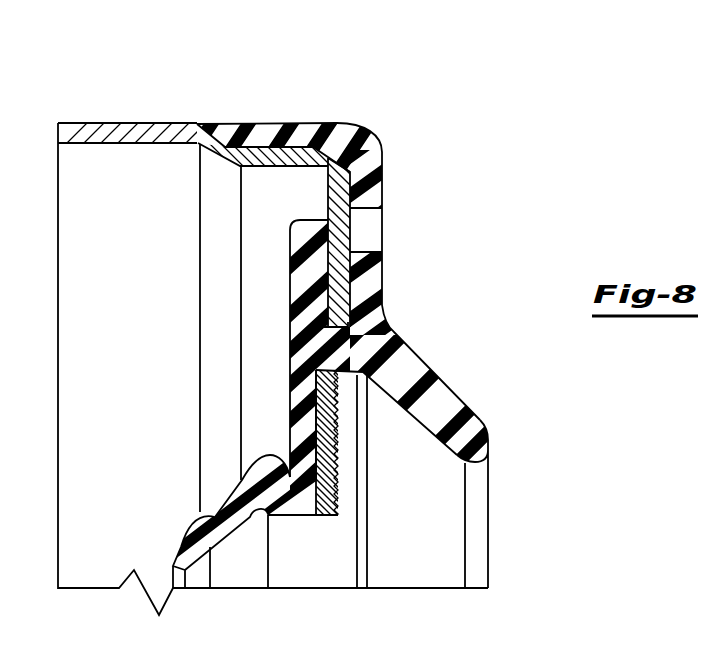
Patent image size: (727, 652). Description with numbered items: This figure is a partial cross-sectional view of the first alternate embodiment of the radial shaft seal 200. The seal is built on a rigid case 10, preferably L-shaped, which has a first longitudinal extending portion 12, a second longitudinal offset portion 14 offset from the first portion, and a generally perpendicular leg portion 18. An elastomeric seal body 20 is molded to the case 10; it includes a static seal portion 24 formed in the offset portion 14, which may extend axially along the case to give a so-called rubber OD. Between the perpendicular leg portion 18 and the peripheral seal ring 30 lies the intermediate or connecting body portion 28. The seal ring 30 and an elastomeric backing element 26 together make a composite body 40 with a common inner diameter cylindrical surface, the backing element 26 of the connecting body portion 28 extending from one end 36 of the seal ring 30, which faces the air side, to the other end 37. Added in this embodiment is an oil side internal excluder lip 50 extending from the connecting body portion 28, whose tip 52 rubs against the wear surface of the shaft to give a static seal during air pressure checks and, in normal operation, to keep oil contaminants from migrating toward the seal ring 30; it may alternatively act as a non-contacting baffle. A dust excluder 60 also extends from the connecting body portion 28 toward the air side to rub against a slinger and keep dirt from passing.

The rigid case 10 is at (175, 121).
The first longitudinal extending portion 12 is at (268, 160).
The offset portion 14 is at (127, 122).
The perpendicular leg portion 18 is at (342, 237).
The elastomeric seal body 20 is at (291, 250).
The static seal portion 24 is at (316, 123).
The elastomeric backing element 26 is at (245, 473).
The connecting body portion 28 is at (303, 377).
The seal ring 30 is at (340, 462).
The one end of the seal ring 36 is at (318, 515).
The other end of the seal ring 37 is at (290, 348).
The composite body 40 is at (298, 421).
The internal excluder lip 50 is at (430, 392).
The tip of the excluder lip 52 is at (440, 424).
The dust excluder 60 is at (185, 546).
The radial shaft seal 200 is at (190, 312).